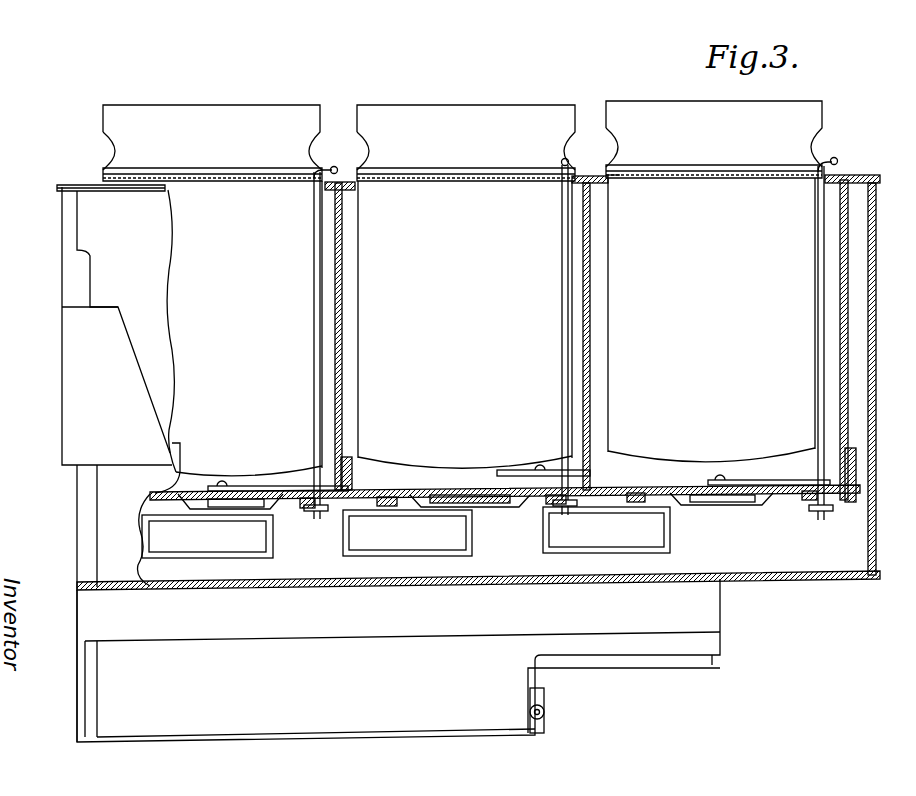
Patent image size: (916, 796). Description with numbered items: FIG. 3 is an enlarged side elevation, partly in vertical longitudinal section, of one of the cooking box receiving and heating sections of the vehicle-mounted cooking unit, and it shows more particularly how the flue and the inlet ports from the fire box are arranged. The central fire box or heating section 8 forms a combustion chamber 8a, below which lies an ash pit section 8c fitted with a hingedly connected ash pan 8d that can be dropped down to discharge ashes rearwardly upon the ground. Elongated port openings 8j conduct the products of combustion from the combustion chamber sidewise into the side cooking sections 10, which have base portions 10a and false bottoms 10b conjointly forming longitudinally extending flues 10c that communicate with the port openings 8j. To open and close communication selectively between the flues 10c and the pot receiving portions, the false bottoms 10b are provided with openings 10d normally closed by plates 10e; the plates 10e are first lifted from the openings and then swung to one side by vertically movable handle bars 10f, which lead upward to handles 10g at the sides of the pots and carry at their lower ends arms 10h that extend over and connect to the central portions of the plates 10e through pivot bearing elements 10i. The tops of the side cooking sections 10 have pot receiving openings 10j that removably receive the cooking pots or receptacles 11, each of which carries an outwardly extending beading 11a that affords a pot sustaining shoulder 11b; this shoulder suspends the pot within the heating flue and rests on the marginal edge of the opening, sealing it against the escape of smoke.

The central fire box or heating section 8 is at (478, 656).
The combustion chamber 8a is at (406, 532).
The ash pit section 8c is at (280, 705).
The ash pan 8d is at (346, 733).
The port openings 8j is at (210, 545).
The side cooking sections 10 is at (62, 393).
The base portions 10a is at (110, 543).
The false bottoms 10b is at (156, 494).
The flues 10c is at (886, 163).
The openings 10d is at (463, 503).
The plates 10e is at (198, 493).
The handle bars 10f is at (314, 390).
The handles 10g is at (340, 170).
The arms 10h is at (283, 486).
The pivot bearing elements 10i is at (228, 484).
The pot receiving openings 10j is at (580, 176).
The cooking pots or receptacles 11 is at (462, 288).
The beading 11a is at (112, 171).
The pot sustaining shoulder 11b is at (96, 182).